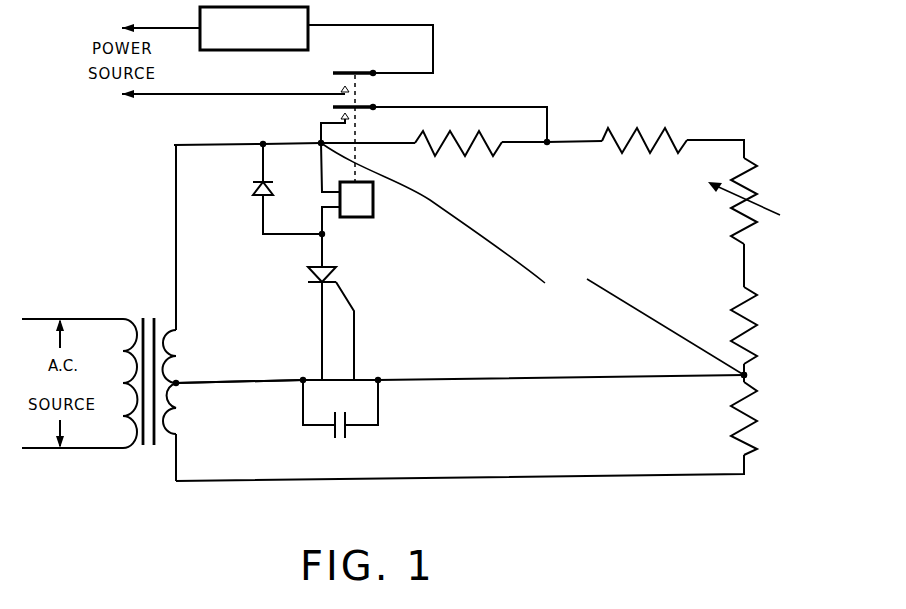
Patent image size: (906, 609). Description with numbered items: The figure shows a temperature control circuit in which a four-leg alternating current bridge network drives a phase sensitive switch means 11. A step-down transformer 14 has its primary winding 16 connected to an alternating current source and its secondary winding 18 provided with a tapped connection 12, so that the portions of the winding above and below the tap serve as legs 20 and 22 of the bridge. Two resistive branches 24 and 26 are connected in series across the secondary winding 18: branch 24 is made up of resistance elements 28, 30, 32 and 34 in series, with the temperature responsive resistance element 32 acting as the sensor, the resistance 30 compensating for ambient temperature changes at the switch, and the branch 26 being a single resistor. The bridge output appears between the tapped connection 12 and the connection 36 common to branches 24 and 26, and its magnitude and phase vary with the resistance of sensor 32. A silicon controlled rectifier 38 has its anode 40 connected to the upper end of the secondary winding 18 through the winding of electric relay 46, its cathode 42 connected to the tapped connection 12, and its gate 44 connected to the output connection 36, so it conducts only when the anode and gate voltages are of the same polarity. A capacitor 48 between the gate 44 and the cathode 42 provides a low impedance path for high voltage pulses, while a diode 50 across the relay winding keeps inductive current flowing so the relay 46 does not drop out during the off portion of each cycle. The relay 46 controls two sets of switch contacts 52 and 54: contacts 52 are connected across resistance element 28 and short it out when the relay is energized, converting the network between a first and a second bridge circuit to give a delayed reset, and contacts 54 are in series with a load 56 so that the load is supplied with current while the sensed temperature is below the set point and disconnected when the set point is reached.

The phase sensitive switch means 11 is at (567, 358).
The tapped connection 12 is at (178, 382).
The transformer 14 is at (145, 305).
The primary winding 16 is at (128, 404).
The secondary winding 18 is at (172, 438).
The leg 20 is at (169, 351).
The leg 22 is at (169, 412).
The branch 24 is at (532, 259).
The resistive branch 26 is at (737, 431).
The resistance element 28 is at (465, 152).
The resistance 30 is at (622, 152).
The temperature responsive resistance element 32 is at (733, 207).
The resistance element 34 is at (723, 325).
The connection 36 is at (745, 383).
The silicon controlled rectifier 38 is at (338, 270).
The anode 40 is at (318, 251).
The cathode 42 is at (320, 303).
The gate 44 is at (353, 309).
The electric relay 46 is at (375, 207).
The capacitor 48 is at (346, 431).
The diode 50 is at (257, 193).
The switch contacts 52 is at (340, 117).
The switch contacts 54 is at (362, 78).
The load 56 is at (227, 50).